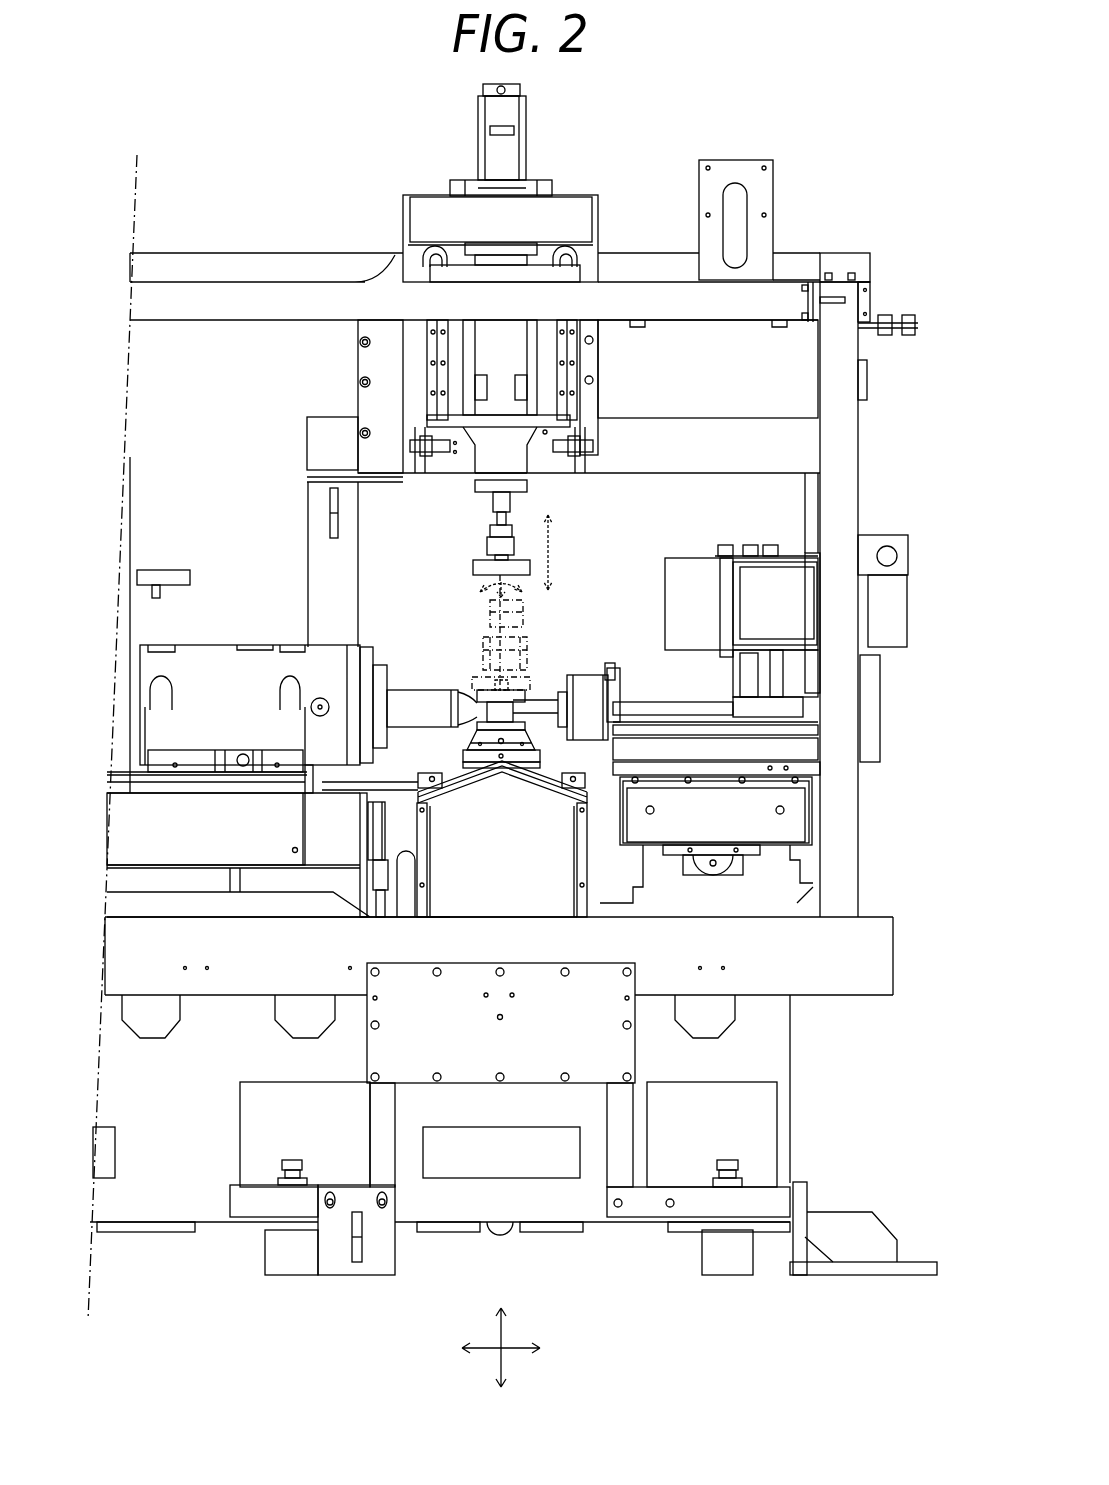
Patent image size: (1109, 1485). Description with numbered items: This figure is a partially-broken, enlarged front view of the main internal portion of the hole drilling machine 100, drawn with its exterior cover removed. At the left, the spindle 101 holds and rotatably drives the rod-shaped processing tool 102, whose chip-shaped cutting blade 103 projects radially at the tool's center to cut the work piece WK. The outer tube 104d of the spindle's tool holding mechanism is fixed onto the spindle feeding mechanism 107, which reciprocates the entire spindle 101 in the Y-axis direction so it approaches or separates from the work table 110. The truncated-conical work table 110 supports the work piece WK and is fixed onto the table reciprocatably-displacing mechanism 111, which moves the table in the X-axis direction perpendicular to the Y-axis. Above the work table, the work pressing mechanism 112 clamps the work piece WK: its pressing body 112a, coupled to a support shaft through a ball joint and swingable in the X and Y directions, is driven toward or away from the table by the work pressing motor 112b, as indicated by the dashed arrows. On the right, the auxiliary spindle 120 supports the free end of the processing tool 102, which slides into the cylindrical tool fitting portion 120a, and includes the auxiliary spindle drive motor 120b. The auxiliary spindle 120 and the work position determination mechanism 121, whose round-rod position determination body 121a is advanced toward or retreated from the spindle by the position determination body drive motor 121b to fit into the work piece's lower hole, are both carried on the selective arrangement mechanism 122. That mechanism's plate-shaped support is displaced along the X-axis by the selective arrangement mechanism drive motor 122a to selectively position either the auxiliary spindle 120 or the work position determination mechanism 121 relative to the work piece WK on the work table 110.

The hole drilling machine 100 is at (816, 119).
The spindle 101 is at (377, 645).
The processing tool 102 is at (422, 688).
The cutting blade 103 is at (537, 702).
The outer tube 104d is at (218, 645).
The spindle feeding mechanism 107 is at (200, 750).
The work table 110 is at (480, 733).
The table reciprocatably-displacing mechanism 111 is at (440, 768).
The work pressing mechanism 112 is at (472, 501).
The pressing body 112a is at (475, 563).
The work pressing motor 112b is at (478, 140).
The auxiliary spindle 120 is at (632, 665).
The tool fitting portion 120a is at (527, 758).
The auxiliary spindle drive motor 120b is at (757, 545).
The work position determination mechanism 121 is at (835, 778).
The position determination body 121a is at (692, 700).
The position determination body drive motor 121b is at (817, 642).
The selective arrangement mechanism 122 is at (616, 862).
The selective arrangement mechanism drive motor 122a is at (713, 863).
The work piece WK is at (478, 690).